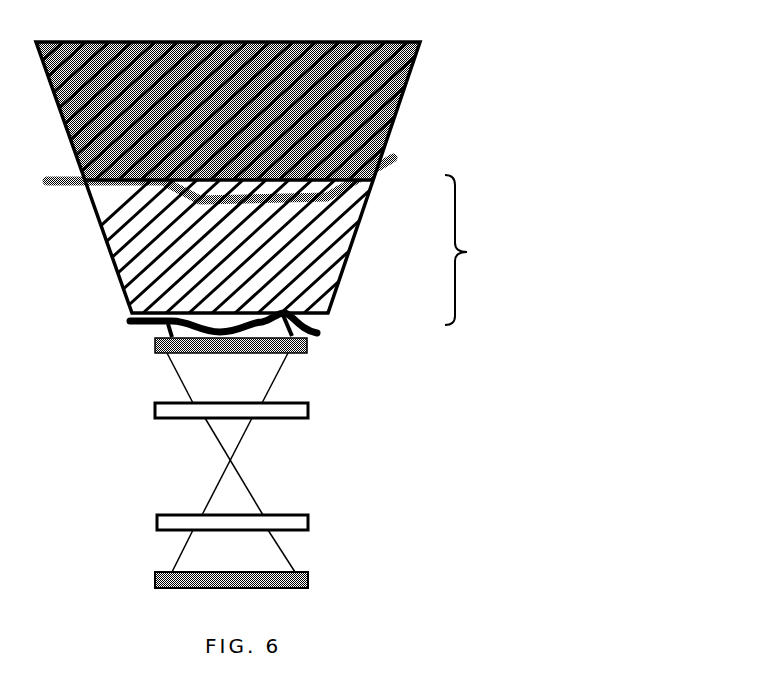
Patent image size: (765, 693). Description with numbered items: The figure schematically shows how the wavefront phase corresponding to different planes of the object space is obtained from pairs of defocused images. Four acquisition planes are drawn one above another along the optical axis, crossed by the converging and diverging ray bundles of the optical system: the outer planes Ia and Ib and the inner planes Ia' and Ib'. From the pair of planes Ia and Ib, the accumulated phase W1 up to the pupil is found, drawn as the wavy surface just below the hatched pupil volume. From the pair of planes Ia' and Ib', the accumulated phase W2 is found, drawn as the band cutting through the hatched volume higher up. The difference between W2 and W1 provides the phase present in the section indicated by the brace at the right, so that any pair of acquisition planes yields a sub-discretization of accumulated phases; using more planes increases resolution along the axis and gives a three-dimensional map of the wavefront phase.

The accumulated phase W2 is at (201, 179).
The accumulated phase W1 is at (198, 321).
The plane Ia is at (247, 354).
The plane Ia' is at (252, 418).
The plane Ib' is at (255, 526).
The plane Ib is at (253, 581).